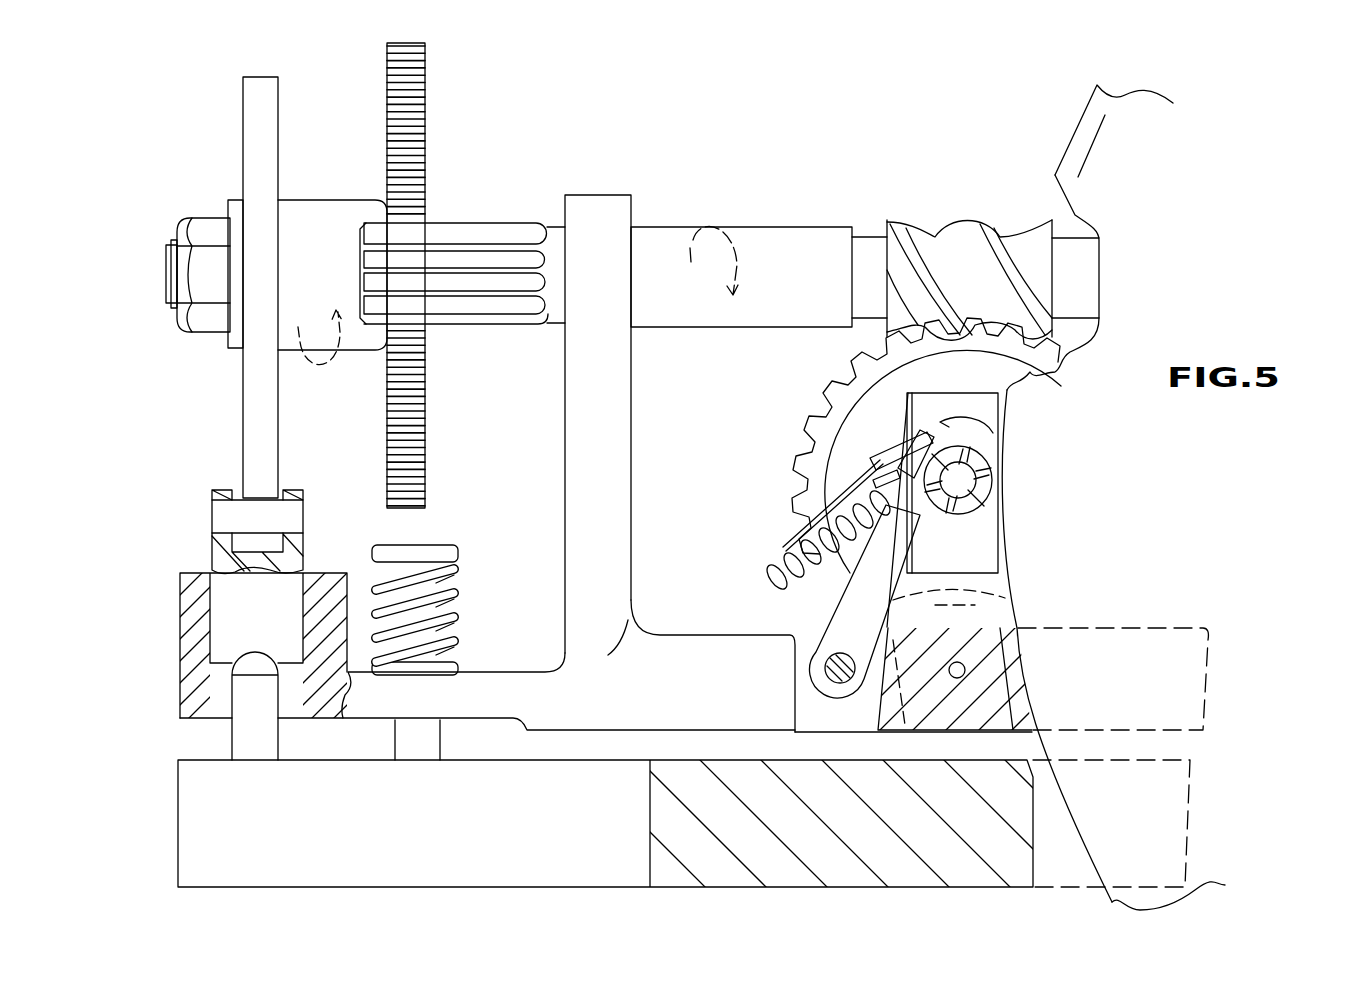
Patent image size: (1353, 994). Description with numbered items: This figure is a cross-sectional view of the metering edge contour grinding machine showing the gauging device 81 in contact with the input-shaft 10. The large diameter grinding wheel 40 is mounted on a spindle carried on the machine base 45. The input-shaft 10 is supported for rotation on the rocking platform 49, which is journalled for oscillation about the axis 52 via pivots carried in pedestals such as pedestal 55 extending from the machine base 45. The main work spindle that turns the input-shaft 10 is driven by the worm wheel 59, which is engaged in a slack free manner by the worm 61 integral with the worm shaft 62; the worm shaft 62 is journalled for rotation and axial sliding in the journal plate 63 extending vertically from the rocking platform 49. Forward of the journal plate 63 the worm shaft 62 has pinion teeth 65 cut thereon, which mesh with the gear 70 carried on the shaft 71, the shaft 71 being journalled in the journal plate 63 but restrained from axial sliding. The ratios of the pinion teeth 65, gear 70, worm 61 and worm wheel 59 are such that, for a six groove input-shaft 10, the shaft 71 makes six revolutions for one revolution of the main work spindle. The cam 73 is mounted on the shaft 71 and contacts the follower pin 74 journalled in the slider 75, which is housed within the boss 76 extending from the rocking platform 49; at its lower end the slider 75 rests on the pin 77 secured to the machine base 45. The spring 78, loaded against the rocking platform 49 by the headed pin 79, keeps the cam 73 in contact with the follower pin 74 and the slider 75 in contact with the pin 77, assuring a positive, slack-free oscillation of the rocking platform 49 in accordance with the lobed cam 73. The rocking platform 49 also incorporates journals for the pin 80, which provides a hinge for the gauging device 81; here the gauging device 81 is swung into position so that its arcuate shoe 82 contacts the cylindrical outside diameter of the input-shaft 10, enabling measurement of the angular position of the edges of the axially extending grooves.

The input-shaft 10 is at (993, 455).
The grinding wheel 40 is at (1127, 218).
The machine base 45 is at (195, 832).
The rocking platform 49 is at (630, 618).
The axis 52 is at (995, 675).
The pedestal 55 is at (927, 750).
The worm wheel 59 is at (823, 408).
The worm 61 is at (972, 235).
The worm shaft 62 is at (795, 245).
The journal plate 63 is at (618, 205).
The pinion teeth 65 is at (484, 245).
The gear 70 is at (410, 90).
The shaft 71 is at (162, 273).
The cam 73 is at (275, 105).
The follower pin 74 is at (215, 495).
The slider 75 is at (215, 550).
The boss 76 is at (180, 600).
The pin 77 is at (240, 740).
The spring 78 is at (453, 632).
The headed pin 79 is at (420, 743).
The pin 80 is at (825, 688).
The gauging device 81 is at (845, 600).
The arcuate shoe 82 is at (926, 500).